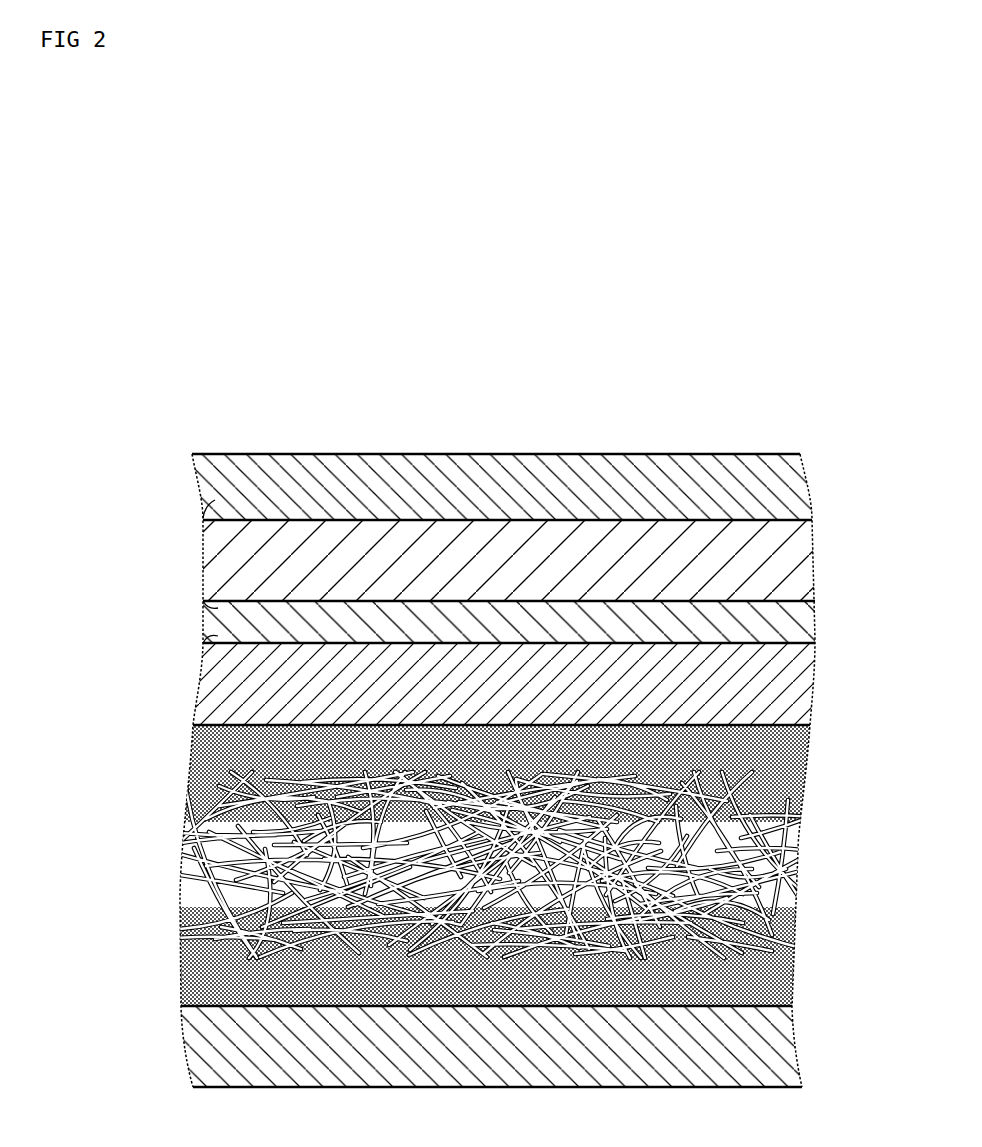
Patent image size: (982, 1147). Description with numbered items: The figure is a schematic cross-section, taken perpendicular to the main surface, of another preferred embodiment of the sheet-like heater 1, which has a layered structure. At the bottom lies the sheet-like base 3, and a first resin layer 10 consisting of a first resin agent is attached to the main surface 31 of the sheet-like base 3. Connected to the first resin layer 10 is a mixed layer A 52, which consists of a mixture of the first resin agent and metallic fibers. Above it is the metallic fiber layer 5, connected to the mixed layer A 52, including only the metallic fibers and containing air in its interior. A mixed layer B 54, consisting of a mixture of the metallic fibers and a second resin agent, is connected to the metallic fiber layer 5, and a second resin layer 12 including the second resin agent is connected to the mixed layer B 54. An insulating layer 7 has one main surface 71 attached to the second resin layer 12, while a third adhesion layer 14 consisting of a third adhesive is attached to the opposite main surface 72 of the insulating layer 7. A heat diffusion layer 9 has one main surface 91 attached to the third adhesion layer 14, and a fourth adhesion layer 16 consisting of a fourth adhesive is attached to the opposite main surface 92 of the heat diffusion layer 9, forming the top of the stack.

The sheet-like heater 1 is at (750, 420).
The sheet-like base 3 is at (780, 1048).
The metallic fiber layer 5 is at (787, 853).
The insulating layer 7 is at (802, 682).
The heat diffusion layer 9 is at (807, 567).
The first resin layer 10 is at (792, 1006).
The second resin layer 12 is at (812, 725).
The third adhesion layer 14 is at (805, 623).
The fourth adhesion layer 16 is at (802, 483).
The main surface 31 is at (216, 1005).
The mixed layer A 52 is at (796, 907).
The mixed layer B 54 is at (800, 820).
The main surface 71 is at (195, 742).
The opposite main surface 72 is at (200, 640).
The main surface 91 is at (200, 612).
The opposite main surface 92 is at (200, 498).